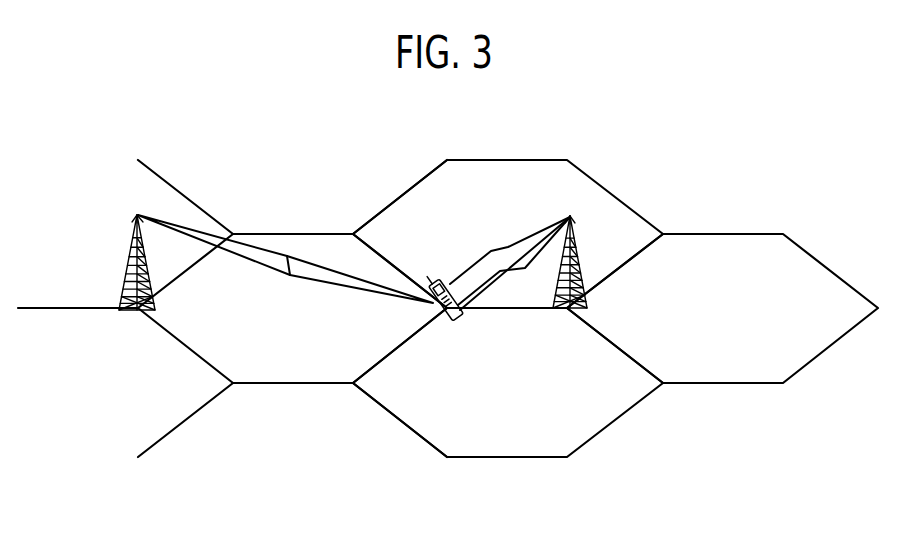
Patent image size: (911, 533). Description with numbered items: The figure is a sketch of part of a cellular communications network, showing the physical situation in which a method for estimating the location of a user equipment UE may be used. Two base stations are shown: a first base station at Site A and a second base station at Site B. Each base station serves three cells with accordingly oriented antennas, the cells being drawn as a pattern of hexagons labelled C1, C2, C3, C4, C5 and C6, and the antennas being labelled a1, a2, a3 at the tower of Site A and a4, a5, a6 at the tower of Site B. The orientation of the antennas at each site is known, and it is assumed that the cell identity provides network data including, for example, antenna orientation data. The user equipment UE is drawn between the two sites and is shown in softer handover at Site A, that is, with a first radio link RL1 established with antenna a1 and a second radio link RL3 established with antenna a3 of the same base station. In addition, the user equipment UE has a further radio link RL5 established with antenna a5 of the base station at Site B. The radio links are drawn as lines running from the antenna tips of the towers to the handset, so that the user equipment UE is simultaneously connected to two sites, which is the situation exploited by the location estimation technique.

The cell C1 is at (505, 445).
The cell C2 is at (728, 243).
The cell C3 is at (488, 163).
The cell C4 is at (160, 428).
The cell C5 is at (294, 375).
The cell C6 is at (160, 190).
The antenna a1 is at (538, 202).
The antenna a2 is at (591, 243).
The antenna a3 is at (571, 200).
The antenna a4 is at (100, 202).
The antenna a5 is at (146, 211).
The antenna a6 is at (143, 194).
The first radio link RL1 is at (492, 252).
The second radio link RL3 is at (478, 298).
The radio link RL5 is at (240, 258).
The user equipment UE is at (455, 318).
The first base station site Site A is at (584, 309).
The second base station site Site B is at (127, 312).